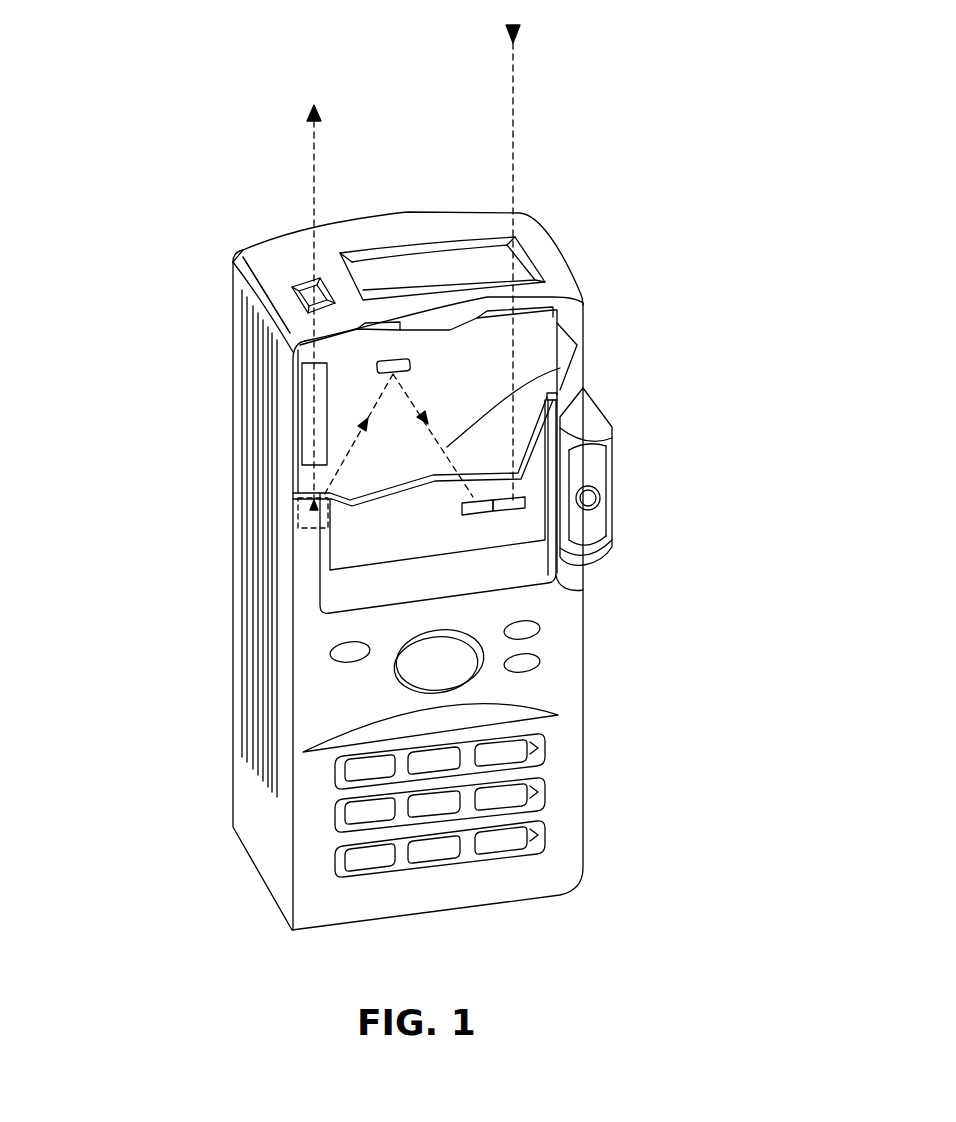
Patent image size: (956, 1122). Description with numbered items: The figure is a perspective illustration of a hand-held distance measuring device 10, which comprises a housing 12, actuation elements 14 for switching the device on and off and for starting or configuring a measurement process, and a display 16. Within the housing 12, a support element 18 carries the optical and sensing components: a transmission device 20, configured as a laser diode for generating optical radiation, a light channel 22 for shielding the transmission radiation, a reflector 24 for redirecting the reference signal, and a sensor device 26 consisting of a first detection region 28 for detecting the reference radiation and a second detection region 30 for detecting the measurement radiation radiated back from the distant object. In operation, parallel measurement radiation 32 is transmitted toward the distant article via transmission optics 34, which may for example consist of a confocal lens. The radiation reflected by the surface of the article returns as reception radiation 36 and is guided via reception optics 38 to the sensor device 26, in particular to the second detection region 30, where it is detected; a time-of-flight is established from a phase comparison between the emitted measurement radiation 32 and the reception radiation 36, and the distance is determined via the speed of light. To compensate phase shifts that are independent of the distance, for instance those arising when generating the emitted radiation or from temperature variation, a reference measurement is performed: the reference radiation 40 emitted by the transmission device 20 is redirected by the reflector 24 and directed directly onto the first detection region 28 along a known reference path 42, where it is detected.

The distance measuring device 10 is at (567, 248).
The housing 12 is at (290, 250).
The actuation elements 14 is at (590, 765).
The display 16 is at (337, 547).
The support element 18 is at (527, 352).
The transmission device 20 is at (300, 523).
The light channel 22 is at (303, 435).
The reflector 24 is at (377, 366).
The sensor device 26 is at (533, 497).
The first detection region 28 is at (480, 512).
The second detection region 30 is at (582, 567).
The measurement radiation 32 is at (317, 247).
The transmission optics 34 is at (297, 285).
The reception radiation 36 is at (513, 212).
The reception optics 38 is at (458, 268).
The reference radiation 40 is at (377, 401).
The reference path 42 is at (560, 368).